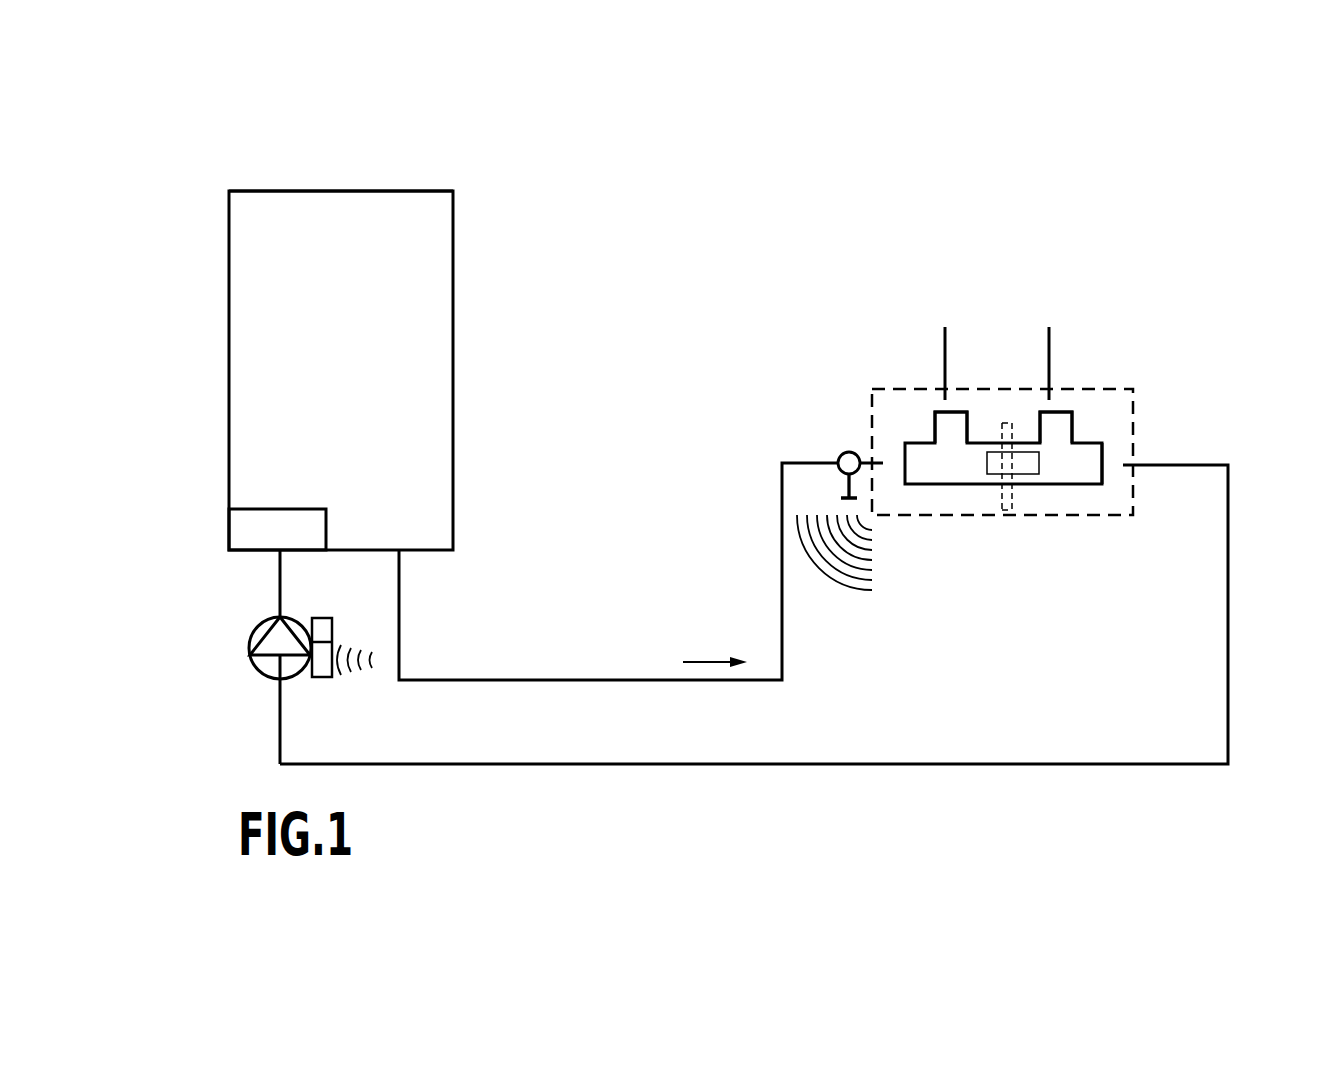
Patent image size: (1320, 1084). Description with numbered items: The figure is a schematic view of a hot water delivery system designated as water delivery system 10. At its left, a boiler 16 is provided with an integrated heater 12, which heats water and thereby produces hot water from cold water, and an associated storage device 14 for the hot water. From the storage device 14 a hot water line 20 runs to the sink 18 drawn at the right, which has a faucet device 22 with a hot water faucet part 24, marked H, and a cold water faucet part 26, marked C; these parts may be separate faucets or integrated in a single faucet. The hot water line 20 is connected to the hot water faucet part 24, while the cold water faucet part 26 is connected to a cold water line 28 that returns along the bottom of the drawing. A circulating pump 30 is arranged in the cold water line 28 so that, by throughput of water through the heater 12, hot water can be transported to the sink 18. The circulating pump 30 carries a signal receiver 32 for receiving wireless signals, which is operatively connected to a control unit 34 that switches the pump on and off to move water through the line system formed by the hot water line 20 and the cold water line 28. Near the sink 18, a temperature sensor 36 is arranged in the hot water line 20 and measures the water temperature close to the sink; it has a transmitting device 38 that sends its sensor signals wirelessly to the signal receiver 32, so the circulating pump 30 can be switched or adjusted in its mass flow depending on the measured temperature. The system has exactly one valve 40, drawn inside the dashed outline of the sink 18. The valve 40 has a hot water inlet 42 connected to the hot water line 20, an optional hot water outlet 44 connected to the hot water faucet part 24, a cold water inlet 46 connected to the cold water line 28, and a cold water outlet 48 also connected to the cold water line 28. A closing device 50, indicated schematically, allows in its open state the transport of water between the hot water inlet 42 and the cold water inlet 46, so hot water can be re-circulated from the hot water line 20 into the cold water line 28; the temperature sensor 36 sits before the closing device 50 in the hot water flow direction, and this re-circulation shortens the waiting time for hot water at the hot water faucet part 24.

The water delivery system 10 is at (818, 178).
The heater 12 is at (250, 532).
The storage device 14 is at (428, 387).
The boiler 16 is at (398, 220).
The sink 18 is at (1097, 389).
The hot water line 20 is at (591, 680).
The faucet device 22 is at (1012, 275).
The hot water faucet part 24 is at (945, 362).
The cold water faucet part 26 is at (1049, 365).
The cold water line 28 is at (1198, 465).
The circulating pump 30 is at (259, 668).
The signal receiver 32 is at (320, 666).
The control unit 34 is at (318, 629).
The temperature sensor 36 is at (846, 454).
The transmitting device 38 is at (838, 487).
The valve 40 is at (955, 470).
The hot water inlet 42 is at (905, 484).
The hot water outlet 44 is at (963, 402).
The cold water inlet 46 is at (1102, 484).
The cold water outlet 48 is at (1072, 425).
The closing device 50 is at (1012, 510).